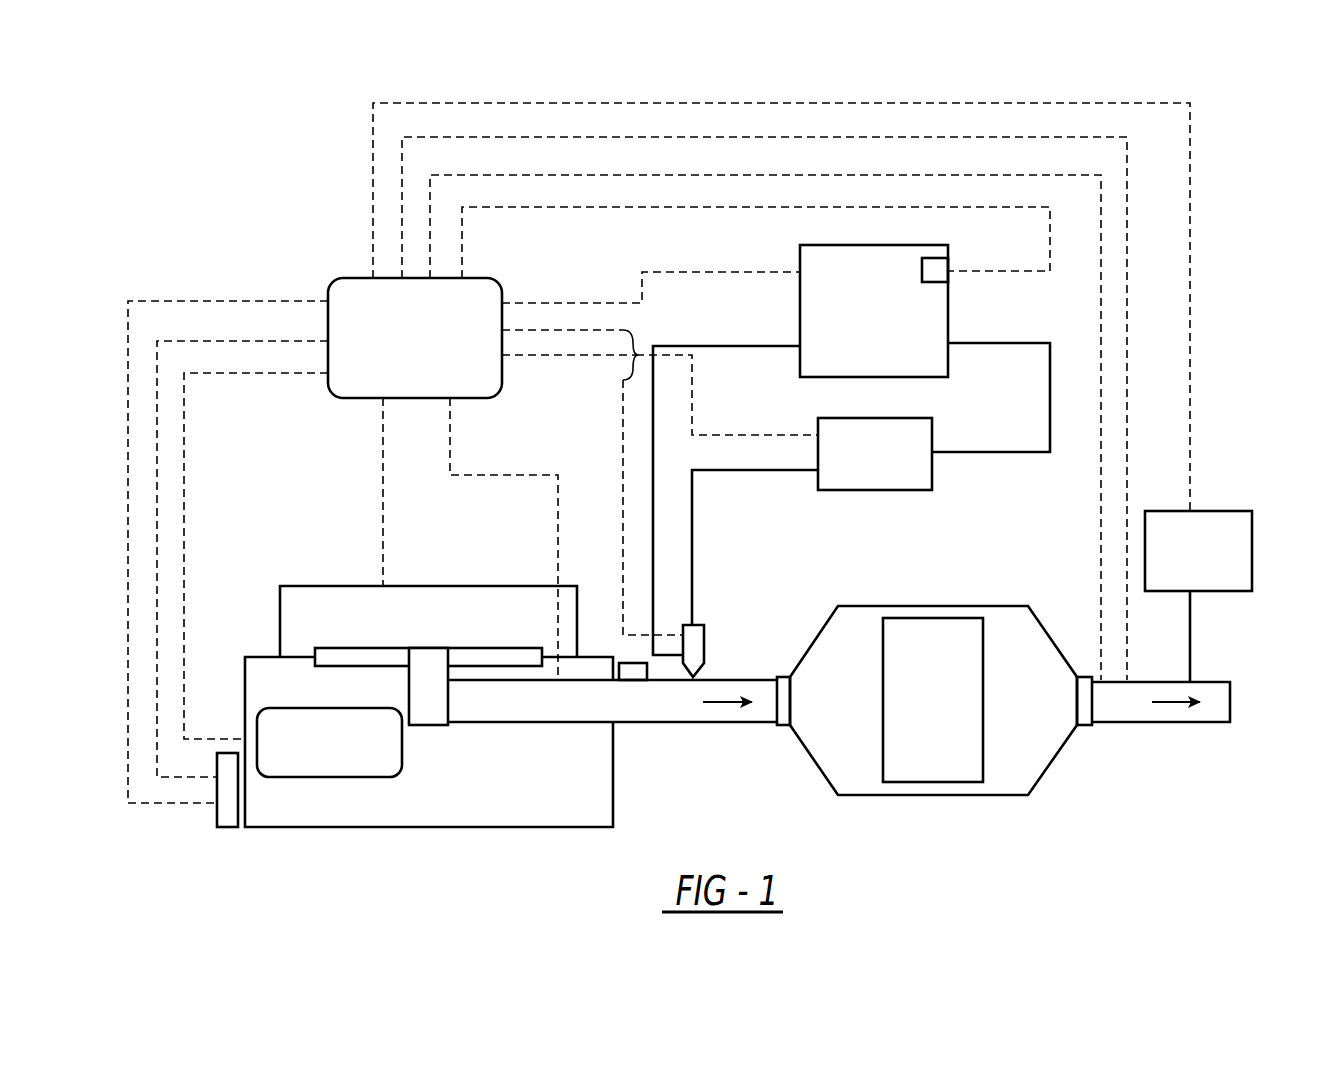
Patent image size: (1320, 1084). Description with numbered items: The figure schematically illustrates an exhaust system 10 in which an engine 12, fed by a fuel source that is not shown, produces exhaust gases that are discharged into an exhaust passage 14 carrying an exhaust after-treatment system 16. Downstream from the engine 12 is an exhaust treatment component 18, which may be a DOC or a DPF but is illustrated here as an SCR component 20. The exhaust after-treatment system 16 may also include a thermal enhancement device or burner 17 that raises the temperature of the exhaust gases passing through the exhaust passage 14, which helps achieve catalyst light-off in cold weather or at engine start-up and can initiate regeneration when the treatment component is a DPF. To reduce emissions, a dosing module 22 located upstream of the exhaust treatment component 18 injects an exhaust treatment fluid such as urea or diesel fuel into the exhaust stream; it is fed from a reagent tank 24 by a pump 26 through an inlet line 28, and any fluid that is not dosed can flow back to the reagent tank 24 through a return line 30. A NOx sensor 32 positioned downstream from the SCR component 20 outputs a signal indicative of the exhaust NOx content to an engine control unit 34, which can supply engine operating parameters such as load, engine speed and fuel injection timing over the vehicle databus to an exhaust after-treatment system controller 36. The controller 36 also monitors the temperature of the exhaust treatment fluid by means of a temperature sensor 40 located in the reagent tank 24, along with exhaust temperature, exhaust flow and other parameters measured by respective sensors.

The exhaust system 10 is at (226, 168).
The engine 12 is at (383, 828).
The exhaust passage 14 is at (635, 723).
The exhaust after-treatment system 16 is at (1082, 764).
The thermal enhancement device or burner 17 is at (630, 662).
The exhaust treatment component 18 is at (784, 736).
The SCR component 20 is at (945, 618).
The dosing module 22 is at (704, 645).
The reagent tank 24 is at (948, 318).
The pump 26 is at (873, 492).
The inlet line 28 is at (693, 510).
The return line 30 is at (772, 346).
The NOx sensor 32 is at (1217, 508).
The engine control unit 34 is at (333, 778).
The exhaust after-treatment system controller 36 is at (480, 280).
The temperature sensor 40 is at (929, 262).